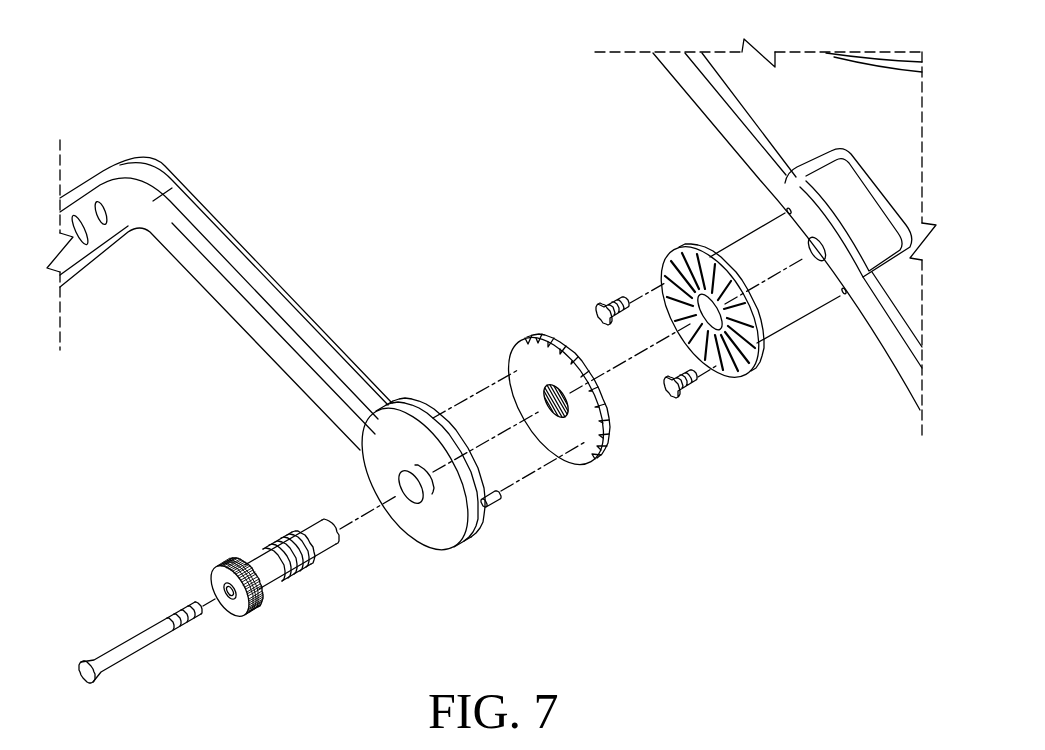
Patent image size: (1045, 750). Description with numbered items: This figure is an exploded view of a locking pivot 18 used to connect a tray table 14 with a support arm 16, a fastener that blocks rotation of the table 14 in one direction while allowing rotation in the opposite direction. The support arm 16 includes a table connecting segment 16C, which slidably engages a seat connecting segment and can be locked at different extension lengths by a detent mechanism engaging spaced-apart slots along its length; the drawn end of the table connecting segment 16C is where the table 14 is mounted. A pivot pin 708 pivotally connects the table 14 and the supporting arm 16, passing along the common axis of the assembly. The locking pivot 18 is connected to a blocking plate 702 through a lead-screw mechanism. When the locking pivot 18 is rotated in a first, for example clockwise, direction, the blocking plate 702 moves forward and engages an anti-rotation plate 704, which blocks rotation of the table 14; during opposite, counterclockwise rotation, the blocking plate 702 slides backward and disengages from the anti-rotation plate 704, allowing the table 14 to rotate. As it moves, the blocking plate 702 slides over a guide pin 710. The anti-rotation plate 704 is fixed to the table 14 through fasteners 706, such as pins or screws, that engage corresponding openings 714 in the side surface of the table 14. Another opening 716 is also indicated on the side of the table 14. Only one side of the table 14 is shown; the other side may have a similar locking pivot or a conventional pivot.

The table 14 is at (690, 112).
The support arm 16 is at (244, 255).
The table connecting segment 16C is at (84, 240).
The locking pivot 18 is at (249, 618).
The blocking plate 702 is at (590, 466).
The anti-rotation plate 704 is at (668, 260).
The fasteners 706 is at (596, 302).
The pivot pin 708 is at (121, 644).
The guide pin 710 is at (497, 505).
The openings 714 is at (785, 211).
The threaded hole 716 is at (812, 262).